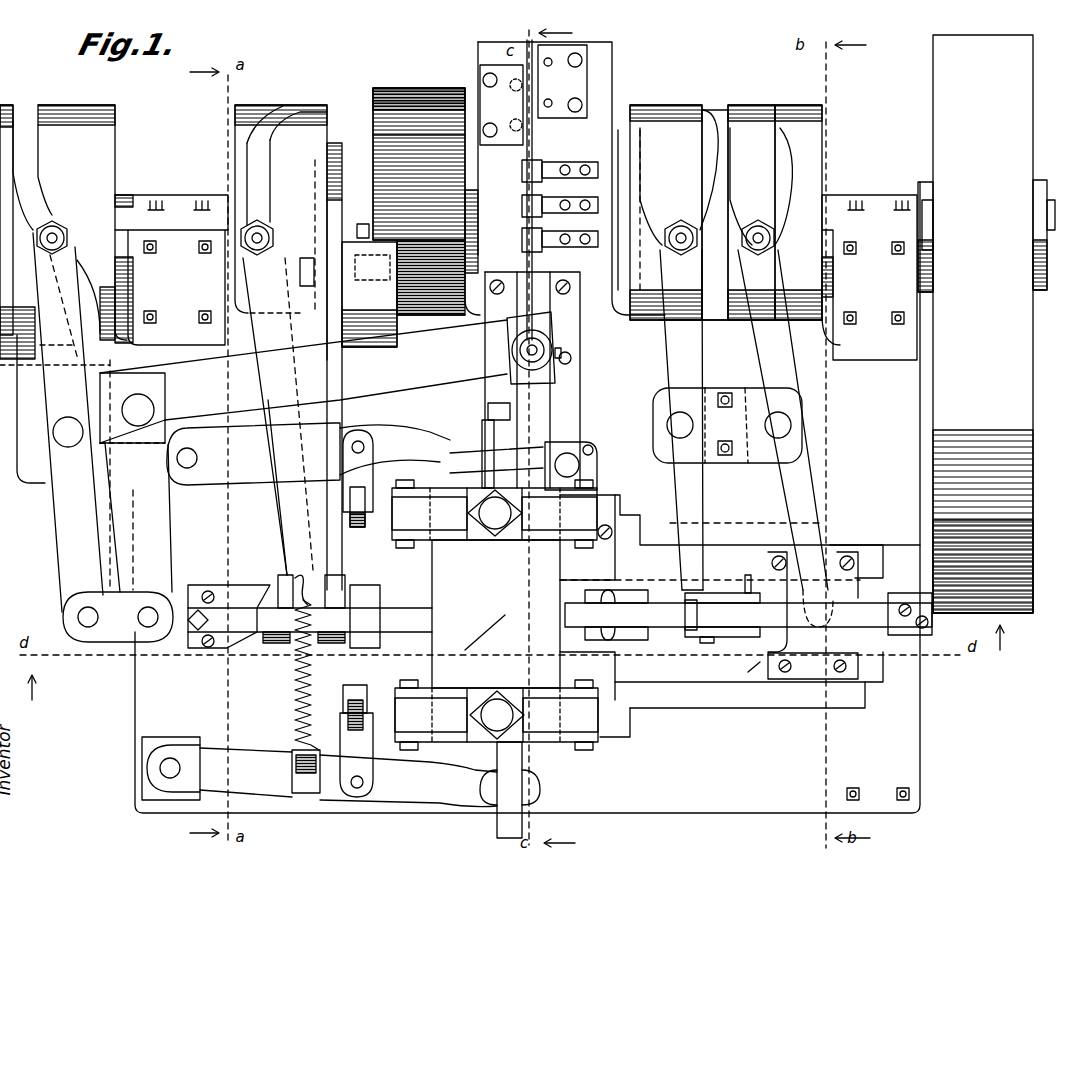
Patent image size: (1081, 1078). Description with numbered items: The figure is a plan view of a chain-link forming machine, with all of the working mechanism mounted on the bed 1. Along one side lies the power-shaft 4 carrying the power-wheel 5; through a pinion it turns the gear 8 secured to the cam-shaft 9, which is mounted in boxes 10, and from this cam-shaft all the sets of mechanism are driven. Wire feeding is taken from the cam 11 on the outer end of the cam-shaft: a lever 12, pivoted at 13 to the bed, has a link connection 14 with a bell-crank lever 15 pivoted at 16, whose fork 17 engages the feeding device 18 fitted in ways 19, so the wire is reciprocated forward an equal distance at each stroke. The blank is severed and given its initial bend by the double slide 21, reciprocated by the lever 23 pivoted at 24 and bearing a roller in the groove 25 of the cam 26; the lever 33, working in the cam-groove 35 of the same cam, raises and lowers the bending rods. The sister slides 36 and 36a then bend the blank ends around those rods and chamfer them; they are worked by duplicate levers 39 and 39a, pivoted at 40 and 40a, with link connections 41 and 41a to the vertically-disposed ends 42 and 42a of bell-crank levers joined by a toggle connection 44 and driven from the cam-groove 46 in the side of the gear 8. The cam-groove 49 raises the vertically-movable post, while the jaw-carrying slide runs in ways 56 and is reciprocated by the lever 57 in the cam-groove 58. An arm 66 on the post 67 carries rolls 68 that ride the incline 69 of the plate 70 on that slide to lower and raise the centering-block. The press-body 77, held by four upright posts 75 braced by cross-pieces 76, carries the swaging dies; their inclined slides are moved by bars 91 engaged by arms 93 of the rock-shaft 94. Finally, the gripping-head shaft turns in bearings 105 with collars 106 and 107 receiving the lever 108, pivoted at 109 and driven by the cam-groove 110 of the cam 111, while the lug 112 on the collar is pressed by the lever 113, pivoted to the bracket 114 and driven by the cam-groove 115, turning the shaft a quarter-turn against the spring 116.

The bed 1 is at (527, 497).
The power-shaft 4 is at (1040, 212).
The power-wheel 5 is at (983, 324).
The gear 8 is at (421, 90).
The cam-shaft 9 is at (940, 235).
The boxes 10 is at (168, 205).
The cam 11 is at (66, 294).
The lever 12 is at (68, 416).
The pivot 13 is at (66, 417).
The link connection 14 is at (115, 642).
The bell-crank lever 15 is at (160, 560).
The pivot 16 is at (150, 405).
The fork 17 is at (552, 344).
The feeding device 18 is at (571, 358).
The ways 19 is at (510, 382).
The double slide 21 is at (721, 597).
The lever 23 is at (785, 423).
The pivot 24 is at (782, 425).
The groove 25 is at (741, 212).
The cam 26 is at (751, 212).
The lever 33 is at (648, 178).
The cam-groove 35 is at (632, 140).
The sister slide 36 is at (522, 822).
The sister slide 36a is at (494, 462).
The lever 39 is at (348, 777).
The lever 39a is at (395, 450).
The pivot 40 is at (172, 758).
The pivot 40a is at (195, 458).
The link connection 41 is at (375, 760).
The link connection 41a is at (370, 475).
The vertically-disposed end 42 is at (365, 690).
The vertically-disposed end 42a is at (383, 524).
The toggle connection 44 is at (357, 232).
The cam-groove 46 is at (378, 140).
The cam-groove 49 is at (825, 275).
The ways 56 is at (738, 586).
The lever 57 is at (681, 405).
The cam-groove 58 is at (714, 215).
The arm 66 is at (580, 615).
The post 67 is at (908, 636).
The rolls 68 is at (722, 615).
The incline 69 is at (695, 635).
The plate 70 is at (755, 672).
The upright posts 75 is at (495, 615).
The bracing cross-pieces 76 is at (497, 614).
The press-body 77 is at (496, 614).
The bars 91 is at (482, 435).
The arms 93 is at (520, 465).
The rock-shaft 94 is at (575, 465).
The bearings 105 is at (210, 648).
The collar 106 is at (337, 652).
The collar 107 is at (269, 652).
The lever 108 is at (294, 404).
The pivot 109 is at (303, 384).
The cam-groove 110 is at (262, 195).
The cam 111 is at (298, 244).
The lug 112 is at (347, 578).
The lever 113 is at (330, 478).
The bracket 114 is at (369, 294).
The cam-groove 115 is at (335, 198).
The spring 116 is at (294, 675).